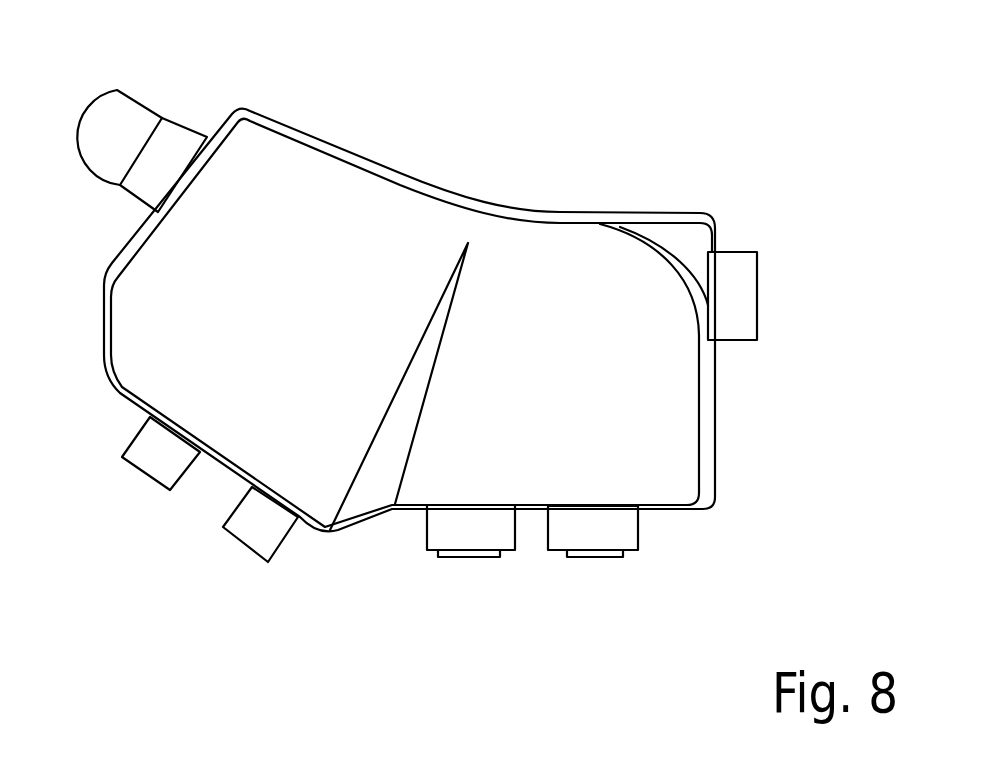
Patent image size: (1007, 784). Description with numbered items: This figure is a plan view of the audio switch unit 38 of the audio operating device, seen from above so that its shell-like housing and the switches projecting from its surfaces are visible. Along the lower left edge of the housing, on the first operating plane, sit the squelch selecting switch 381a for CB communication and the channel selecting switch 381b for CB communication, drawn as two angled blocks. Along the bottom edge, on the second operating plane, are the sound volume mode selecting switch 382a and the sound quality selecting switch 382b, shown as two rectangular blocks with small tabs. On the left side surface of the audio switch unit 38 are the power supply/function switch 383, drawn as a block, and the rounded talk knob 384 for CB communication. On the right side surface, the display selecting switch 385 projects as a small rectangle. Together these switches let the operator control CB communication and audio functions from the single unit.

The audio switch unit 38 is at (732, 416).
The squelch selecting switch 381a is at (162, 470).
The channel selecting switch 381b is at (243, 533).
The sound volume mode selecting switch 382a is at (437, 530).
The sound quality selecting switch 382b is at (625, 538).
The power supply/function switch 383 is at (177, 140).
The talk knob 384 is at (123, 102).
The display selecting switch 385 is at (748, 267).